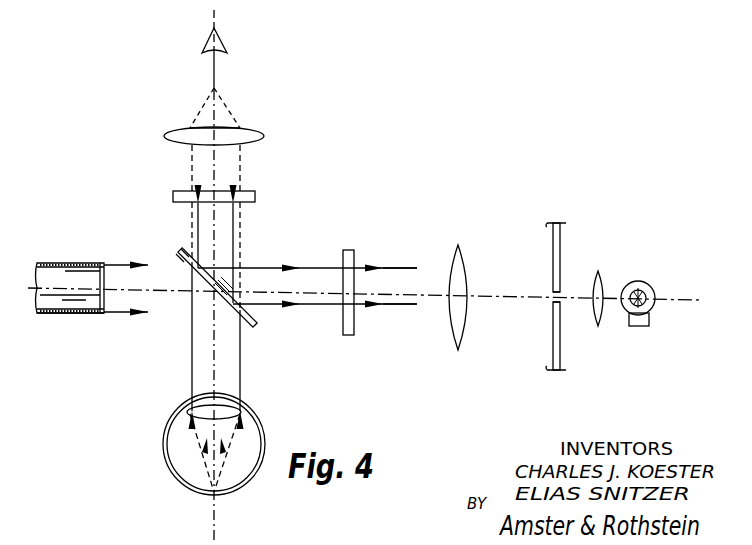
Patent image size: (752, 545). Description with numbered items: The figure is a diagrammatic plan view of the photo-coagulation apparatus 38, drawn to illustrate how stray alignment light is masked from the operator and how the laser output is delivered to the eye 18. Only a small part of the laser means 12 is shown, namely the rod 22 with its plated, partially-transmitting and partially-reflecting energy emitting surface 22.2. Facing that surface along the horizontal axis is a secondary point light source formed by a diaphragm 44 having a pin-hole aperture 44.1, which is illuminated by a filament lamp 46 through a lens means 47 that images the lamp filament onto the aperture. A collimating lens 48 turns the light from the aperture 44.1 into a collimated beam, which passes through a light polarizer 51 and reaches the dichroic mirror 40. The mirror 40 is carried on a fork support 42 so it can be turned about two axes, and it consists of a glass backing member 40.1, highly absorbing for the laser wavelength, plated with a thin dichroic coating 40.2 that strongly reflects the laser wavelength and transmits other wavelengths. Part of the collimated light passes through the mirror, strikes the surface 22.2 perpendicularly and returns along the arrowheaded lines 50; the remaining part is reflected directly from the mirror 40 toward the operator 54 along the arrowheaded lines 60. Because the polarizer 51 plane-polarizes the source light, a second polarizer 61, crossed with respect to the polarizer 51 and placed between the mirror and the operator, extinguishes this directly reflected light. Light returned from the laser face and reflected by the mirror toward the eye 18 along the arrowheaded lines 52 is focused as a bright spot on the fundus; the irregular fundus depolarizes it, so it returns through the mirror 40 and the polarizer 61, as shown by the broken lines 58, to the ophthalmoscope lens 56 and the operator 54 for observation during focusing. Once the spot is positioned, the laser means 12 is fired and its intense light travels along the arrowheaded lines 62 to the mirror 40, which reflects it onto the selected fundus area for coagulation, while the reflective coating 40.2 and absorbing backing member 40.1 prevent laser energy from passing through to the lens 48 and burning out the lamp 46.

The laser means 12 is at (52, 256).
The rod 22 is at (63, 313).
The energy emitting surface 22.2 is at (110, 267).
The arrowheaded lines 62 is at (118, 315).
The dichroic mirror 40 is at (256, 332).
The backing member 40.1 is at (183, 250).
The coating 40.2 is at (179, 254).
The fork support 42 is at (226, 283).
The arrowheaded lines 52 is at (194, 332).
The broken lines 58 is at (244, 246).
The arrowheaded lines 60 is at (244, 218).
The polarizer 61 is at (252, 192).
The ophthalmoscope lens 56 is at (262, 133).
The operator 54 is at (229, 36).
The eye 18 is at (245, 486).
The apparatus 38 is at (392, 186).
The arrowheaded lines 50 is at (318, 268).
The light polarizer 51 is at (348, 250).
The collimating lens 48 is at (461, 258).
The diaphragm 44 is at (566, 240).
The pin-hole aperture 44.1 is at (560, 296).
The lens means 47 is at (602, 289).
The filament lamp 46 is at (653, 293).